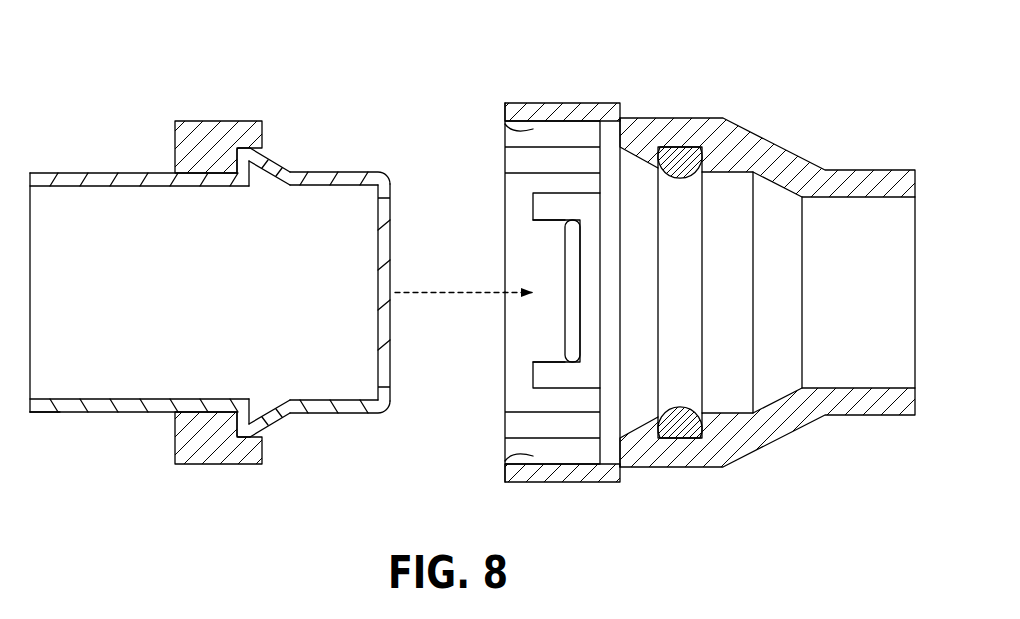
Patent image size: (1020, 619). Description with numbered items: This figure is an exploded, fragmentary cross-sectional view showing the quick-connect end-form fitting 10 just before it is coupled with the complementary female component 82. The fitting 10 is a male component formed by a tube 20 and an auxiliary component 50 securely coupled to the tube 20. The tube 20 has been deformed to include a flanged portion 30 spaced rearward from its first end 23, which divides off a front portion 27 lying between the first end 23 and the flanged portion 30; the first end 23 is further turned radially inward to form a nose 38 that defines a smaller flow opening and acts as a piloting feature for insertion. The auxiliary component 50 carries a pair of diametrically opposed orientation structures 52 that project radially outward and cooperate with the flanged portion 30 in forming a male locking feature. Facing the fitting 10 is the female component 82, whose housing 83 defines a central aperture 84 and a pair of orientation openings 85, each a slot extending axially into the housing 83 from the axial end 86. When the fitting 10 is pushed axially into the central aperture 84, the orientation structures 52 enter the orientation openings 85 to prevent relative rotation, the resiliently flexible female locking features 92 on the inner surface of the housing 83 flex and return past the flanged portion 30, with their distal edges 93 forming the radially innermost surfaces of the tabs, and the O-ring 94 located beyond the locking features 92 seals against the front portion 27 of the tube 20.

The quick-connect end-form fitting 10 is at (152, 490).
The tube 20 is at (126, 167).
The first end 23 is at (393, 190).
The front portion 27 is at (336, 420).
The flanged portion 30 is at (279, 157).
The nose 38 is at (375, 165).
The auxiliary component 50 is at (240, 113).
The orientation structures 52 is at (209, 120).
The female component 82 is at (737, 90).
The housing 83 is at (646, 118).
The central aperture 84 is at (533, 332).
The orientation openings 85 is at (508, 126).
The axial end 86 is at (505, 420).
The female locking features 92 is at (560, 250).
The distal edge 93 is at (570, 277).
The O-ring 94 is at (689, 440).